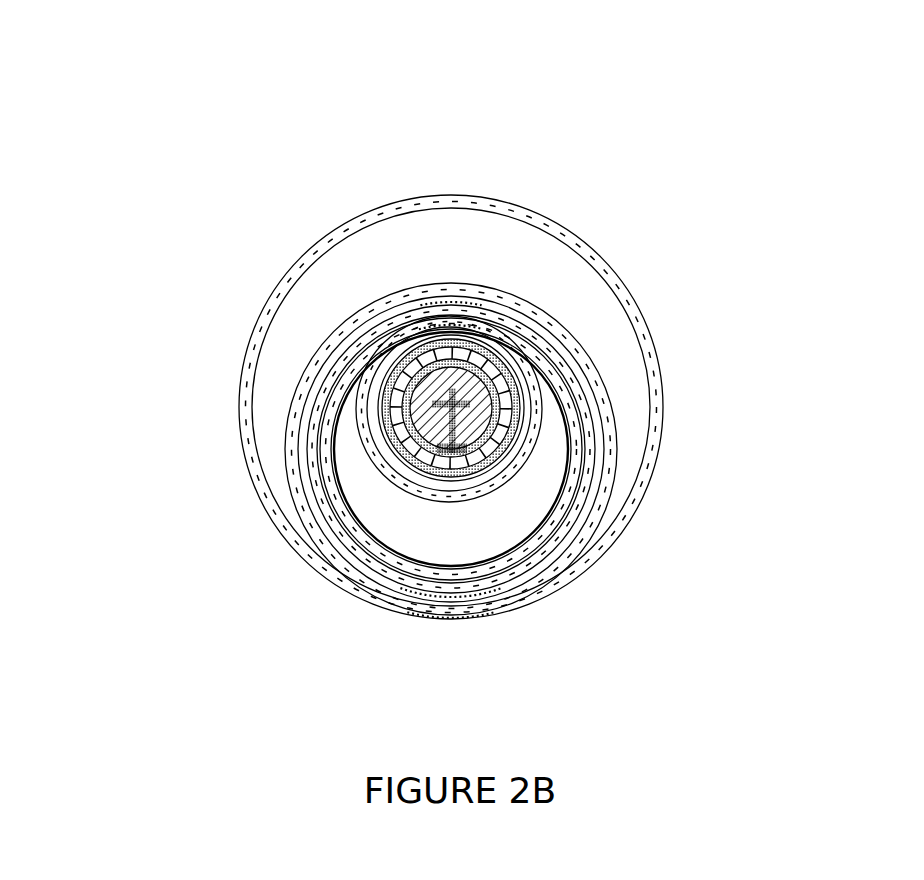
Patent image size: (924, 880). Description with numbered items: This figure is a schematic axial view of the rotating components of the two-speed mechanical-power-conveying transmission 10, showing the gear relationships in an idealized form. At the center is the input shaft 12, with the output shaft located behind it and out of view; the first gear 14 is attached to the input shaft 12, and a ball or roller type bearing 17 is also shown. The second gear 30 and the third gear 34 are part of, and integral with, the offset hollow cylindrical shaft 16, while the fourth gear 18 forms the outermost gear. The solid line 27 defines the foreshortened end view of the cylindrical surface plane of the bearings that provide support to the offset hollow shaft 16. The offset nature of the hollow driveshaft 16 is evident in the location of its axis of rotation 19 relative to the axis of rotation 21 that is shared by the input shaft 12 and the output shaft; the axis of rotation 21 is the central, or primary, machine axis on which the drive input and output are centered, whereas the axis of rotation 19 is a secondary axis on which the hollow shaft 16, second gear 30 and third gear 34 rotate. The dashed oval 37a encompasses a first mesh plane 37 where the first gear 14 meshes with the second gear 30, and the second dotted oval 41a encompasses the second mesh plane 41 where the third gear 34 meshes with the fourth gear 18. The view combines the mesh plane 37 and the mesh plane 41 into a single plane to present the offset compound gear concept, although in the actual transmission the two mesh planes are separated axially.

The transmission 10 is at (452, 125).
The input shaft 12 is at (503, 427).
The first gear 14 is at (502, 485).
The offset hollow cylindrical shaft 16 is at (310, 468).
The bearing 17 is at (388, 365).
The fourth gear 18 is at (613, 278).
The axis of rotation 19 is at (338, 488).
The axis of rotation 21 is at (453, 405).
The solid line 27 is at (347, 585).
The second gear 30 is at (317, 443).
The third gear 34 is at (293, 425).
The first mesh plane 37 is at (500, 295).
The dashed oval 37a is at (477, 285).
The second mesh plane 41 is at (483, 618).
The second dotted oval 41a is at (460, 622).